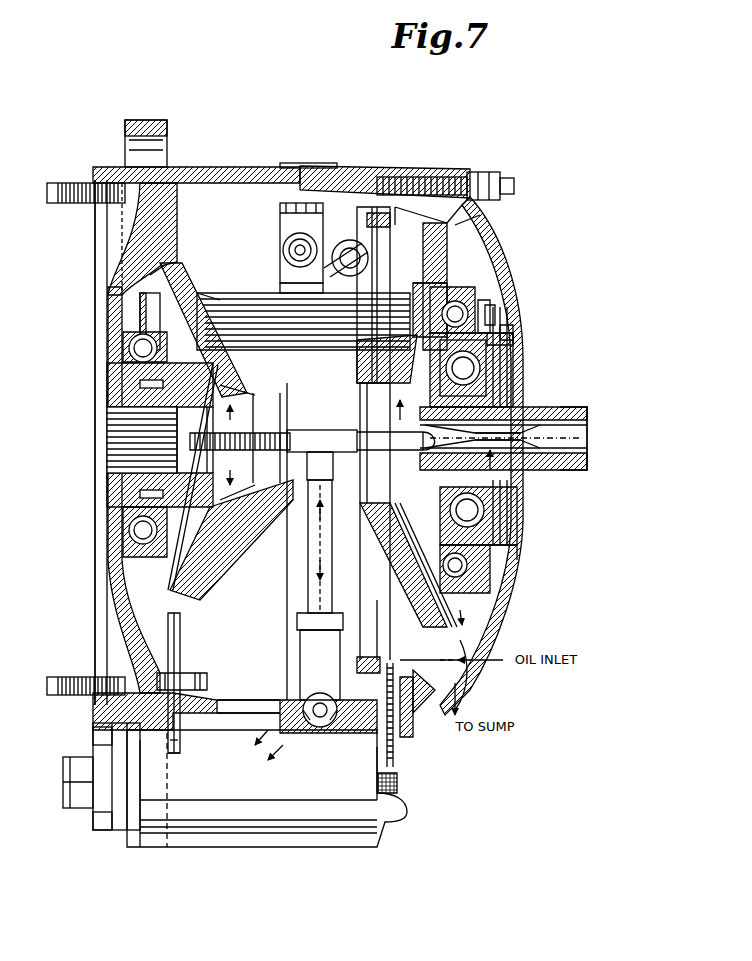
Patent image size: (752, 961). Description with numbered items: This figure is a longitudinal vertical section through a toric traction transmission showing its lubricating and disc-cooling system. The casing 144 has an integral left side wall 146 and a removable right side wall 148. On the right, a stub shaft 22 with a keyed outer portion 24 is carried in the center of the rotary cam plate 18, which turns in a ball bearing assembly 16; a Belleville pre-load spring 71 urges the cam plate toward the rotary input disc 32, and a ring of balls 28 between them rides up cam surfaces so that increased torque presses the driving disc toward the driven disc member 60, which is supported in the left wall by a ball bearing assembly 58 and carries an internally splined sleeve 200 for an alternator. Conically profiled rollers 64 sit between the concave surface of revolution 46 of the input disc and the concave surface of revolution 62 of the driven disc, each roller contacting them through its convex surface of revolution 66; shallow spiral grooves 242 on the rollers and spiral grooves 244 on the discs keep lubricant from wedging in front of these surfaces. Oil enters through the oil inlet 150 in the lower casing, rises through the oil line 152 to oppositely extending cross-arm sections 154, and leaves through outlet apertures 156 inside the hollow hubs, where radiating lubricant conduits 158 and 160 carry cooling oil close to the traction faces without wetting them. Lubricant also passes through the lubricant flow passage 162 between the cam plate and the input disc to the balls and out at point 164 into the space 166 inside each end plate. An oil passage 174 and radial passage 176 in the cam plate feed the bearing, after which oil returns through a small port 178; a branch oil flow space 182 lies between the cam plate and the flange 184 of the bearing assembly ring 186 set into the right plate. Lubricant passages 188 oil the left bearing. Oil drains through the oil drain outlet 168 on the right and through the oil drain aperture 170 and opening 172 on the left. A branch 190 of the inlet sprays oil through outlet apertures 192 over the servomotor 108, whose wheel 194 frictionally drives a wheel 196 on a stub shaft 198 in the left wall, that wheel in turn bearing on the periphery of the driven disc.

The casing 144 is at (230, 170).
The servomotor 108 is at (290, 830).
The spirally extending grooves 242 is at (350, 340).
The concave surface of revolution 62 is at (160, 290).
The lubricant conduit 160 is at (175, 278).
The spirally extending grooves 244 is at (200, 300).
The power-transmitting conically profiled rollers 64 is at (245, 295).
The concave surface of revolution 46 is at (430, 262).
The small port 178 is at (416, 302).
The lubricant flow passage 162 is at (405, 432).
The lubricant passages 188 is at (215, 550).
The convex surface of revolution 66 is at (125, 338).
The ball bearing assembly 58 is at (130, 530).
The internally splined sleeve 200 is at (112, 440).
The left side wall 146 is at (100, 390).
The driven disc member 60 is at (150, 280).
The cross-arm sections 154 is at (298, 430).
The oil line 152 is at (310, 578).
The stub shaft 22 is at (560, 410).
The keyed outer portion 24 is at (585, 410).
The outlet apertures 156 is at (468, 440).
The lubricant conduit 158 is at (452, 300).
The right side wall 148 is at (475, 292).
The ball bearing assembly 16 is at (482, 512).
The rotary cam plate 18 is at (515, 560).
The pre-load spring 71 is at (500, 500).
The oil passage 174 is at (505, 380).
The radial passage 176 is at (500, 352).
The branch oil flow space 182 is at (495, 298).
The flange 184 is at (510, 318).
The bearing assembly ring 186 is at (513, 340).
The space 166 is at (432, 290).
The balls 28 is at (460, 275).
The point 164 is at (455, 262).
The rotary input disc 32 is at (483, 252).
The oil drain aperture 170 is at (178, 645).
The stub shaft 198 is at (205, 682).
The opening 172 is at (252, 704).
The wheel 196 is at (180, 740).
The wheel 194 is at (178, 758).
The outlet apertures 192 is at (312, 742).
The branch 190 is at (370, 790).
The oil drain outlet 168 is at (448, 720).
The oil inlet 150 is at (465, 672).